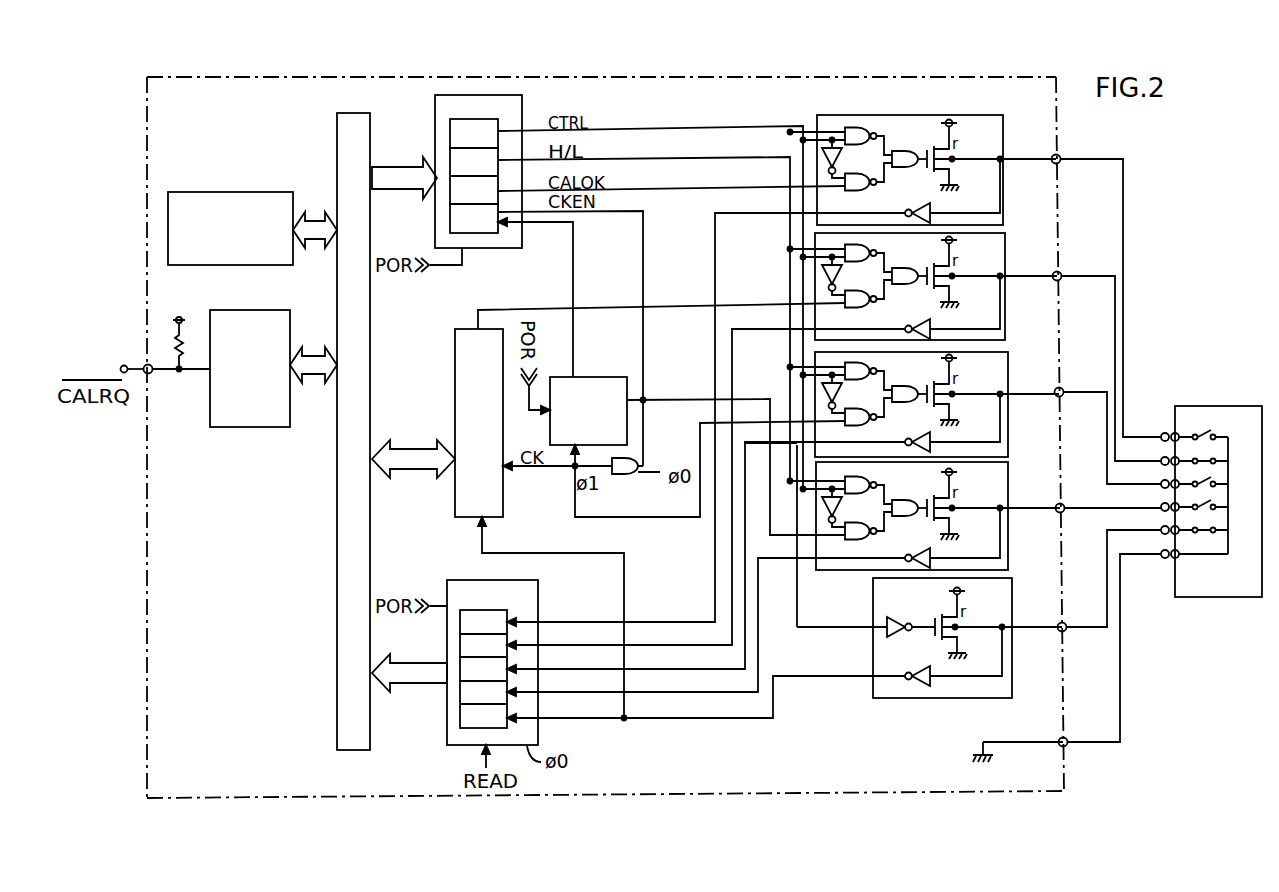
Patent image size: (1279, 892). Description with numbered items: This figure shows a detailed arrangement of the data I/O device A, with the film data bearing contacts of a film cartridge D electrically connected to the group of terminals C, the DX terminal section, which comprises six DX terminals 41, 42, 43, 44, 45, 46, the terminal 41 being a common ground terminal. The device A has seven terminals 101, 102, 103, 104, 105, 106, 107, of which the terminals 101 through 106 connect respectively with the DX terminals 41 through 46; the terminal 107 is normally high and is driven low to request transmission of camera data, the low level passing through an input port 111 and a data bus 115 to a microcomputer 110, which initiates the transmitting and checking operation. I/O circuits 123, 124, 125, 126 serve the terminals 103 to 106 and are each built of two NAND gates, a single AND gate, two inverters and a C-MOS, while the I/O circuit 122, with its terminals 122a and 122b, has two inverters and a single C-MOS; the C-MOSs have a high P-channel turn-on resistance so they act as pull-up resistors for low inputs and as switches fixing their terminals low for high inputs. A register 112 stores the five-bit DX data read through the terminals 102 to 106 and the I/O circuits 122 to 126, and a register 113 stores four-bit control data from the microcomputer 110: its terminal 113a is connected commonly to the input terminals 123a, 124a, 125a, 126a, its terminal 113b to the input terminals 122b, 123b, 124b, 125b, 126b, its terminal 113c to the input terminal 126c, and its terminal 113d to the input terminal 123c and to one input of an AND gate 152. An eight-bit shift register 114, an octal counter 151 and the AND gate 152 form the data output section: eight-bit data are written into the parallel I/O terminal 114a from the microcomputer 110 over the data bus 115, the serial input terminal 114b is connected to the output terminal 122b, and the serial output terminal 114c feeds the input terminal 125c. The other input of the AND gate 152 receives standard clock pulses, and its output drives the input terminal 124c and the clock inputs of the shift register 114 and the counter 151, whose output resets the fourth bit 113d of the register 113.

The data I/O device A is at (786, 77).
The group of terminals C is at (1183, 452).
The film cartridge D is at (1228, 406).
The microcomputer 110 is at (237, 192).
The input port 111 is at (255, 427).
The terminal 107 is at (150, 373).
The data bus 115 is at (337, 560).
The register 113 is at (511, 162).
The terminal for first bit of control data 113a is at (474, 133).
The terminal for second bit of control data 113b is at (474, 162).
The terminal for third bit of control data 113c is at (474, 190).
The terminal for fourth bit of control data 113d is at (474, 218).
The shift register 114 is at (455, 500).
The parallel I/O terminal 114a is at (420, 452).
The serial input terminal 114b is at (514, 555).
The serial output terminal 114c is at (507, 310).
The octal counter 151 is at (598, 377).
The AND gate 152 is at (617, 478).
The register 112 is at (452, 735).
The I/O circuit 126 is at (906, 157).
The input terminal 126a is at (822, 135).
The input terminal 126b is at (808, 133).
The input terminal 126c is at (857, 192).
The I/O circuit 125 is at (889, 285).
The input terminal 125a is at (836, 249).
The input terminal 125b is at (814, 252).
The input terminal 125c is at (884, 310).
The I/O circuit 124 is at (893, 387).
The input terminal 124a is at (830, 364).
The input terminal 124b is at (806, 352).
The input terminal 124c is at (836, 424).
The I/O circuit 123 is at (896, 465).
The input terminal 123a is at (830, 478).
The input terminal 123b is at (812, 490).
The input terminal 123c is at (836, 538).
The I/O circuit 122 is at (929, 653).
The inverter 122a is at (813, 627).
The terminal 122b is at (828, 677).
The terminal 106 is at (1052, 155).
The terminal 105 is at (1053, 272).
The terminal 104 is at (1055, 388).
The terminal 103 is at (1057, 513).
The terminal 102 is at (1058, 623).
The terminal 101 is at (1060, 738).
The DX terminal 46 is at (1183, 430).
The DX terminal 45 is at (1183, 455).
The DX terminal 44 is at (1183, 478).
The DX terminal 43 is at (1183, 501).
The DX terminal 42 is at (1183, 524).
The DX terminal 41 is at (1183, 547).